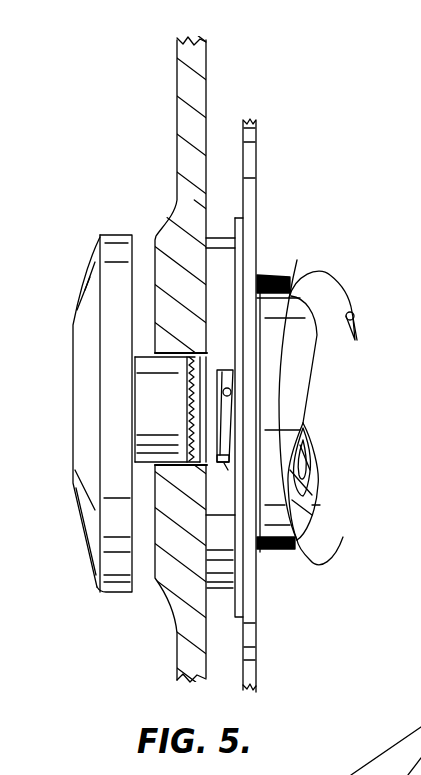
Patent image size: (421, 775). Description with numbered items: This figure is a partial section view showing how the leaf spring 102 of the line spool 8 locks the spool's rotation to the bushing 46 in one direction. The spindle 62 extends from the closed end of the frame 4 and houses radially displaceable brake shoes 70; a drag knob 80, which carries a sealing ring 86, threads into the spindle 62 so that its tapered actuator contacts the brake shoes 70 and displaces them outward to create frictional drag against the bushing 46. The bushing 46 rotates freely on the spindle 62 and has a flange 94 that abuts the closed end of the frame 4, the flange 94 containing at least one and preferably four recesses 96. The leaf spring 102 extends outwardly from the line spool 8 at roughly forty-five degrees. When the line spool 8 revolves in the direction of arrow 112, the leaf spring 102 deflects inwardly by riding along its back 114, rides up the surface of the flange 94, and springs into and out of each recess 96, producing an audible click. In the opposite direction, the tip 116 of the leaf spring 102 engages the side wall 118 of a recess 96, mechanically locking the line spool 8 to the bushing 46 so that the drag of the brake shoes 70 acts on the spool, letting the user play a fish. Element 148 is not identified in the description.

The frame 4 is at (177, 128).
The line spool 8 is at (252, 162).
The bushing 46 is at (318, 512).
The spindle 62 is at (320, 478).
The brake shoe 70 is at (310, 455).
The drag knob 80 is at (73, 428).
The sealing ring 86 is at (135, 392).
The flange 94 is at (218, 268).
The recess 96 is at (205, 388).
The leaf spring 102 is at (232, 418).
The arrow 112 is at (343, 292).
The back of leaf spring 114 is at (220, 388).
The tip 116 is at (240, 442).
The side wall 118 is at (224, 465).
The element 148 is at (420, 746).